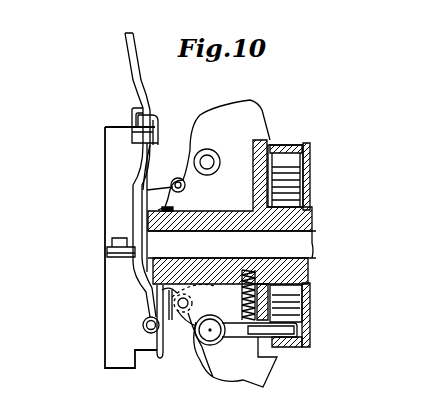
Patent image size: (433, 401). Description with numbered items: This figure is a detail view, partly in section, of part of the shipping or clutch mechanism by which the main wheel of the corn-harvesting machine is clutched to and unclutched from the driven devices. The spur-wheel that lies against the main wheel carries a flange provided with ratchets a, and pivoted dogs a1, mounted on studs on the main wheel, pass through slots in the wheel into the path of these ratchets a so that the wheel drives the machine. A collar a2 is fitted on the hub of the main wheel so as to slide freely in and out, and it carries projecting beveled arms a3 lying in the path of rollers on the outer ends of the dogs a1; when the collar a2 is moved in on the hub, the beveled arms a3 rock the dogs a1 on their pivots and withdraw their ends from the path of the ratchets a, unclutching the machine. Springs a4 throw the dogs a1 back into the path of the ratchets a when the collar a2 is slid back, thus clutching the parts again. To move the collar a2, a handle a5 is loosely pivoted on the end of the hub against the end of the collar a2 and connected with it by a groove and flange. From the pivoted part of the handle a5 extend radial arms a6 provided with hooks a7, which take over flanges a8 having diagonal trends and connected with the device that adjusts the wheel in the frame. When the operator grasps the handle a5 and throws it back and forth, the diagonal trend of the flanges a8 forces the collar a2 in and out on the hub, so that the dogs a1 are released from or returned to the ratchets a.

The ratchets a is at (287, 180).
The pivoted dogs a1 is at (212, 346).
The collar a2 is at (146, 193).
The beveled arms a3 is at (158, 117).
The springs a4 is at (246, 317).
The handle a5 is at (142, 81).
The arms a6 is at (152, 306).
The hooks a7 is at (147, 331).
The flanges a8 is at (160, 360).